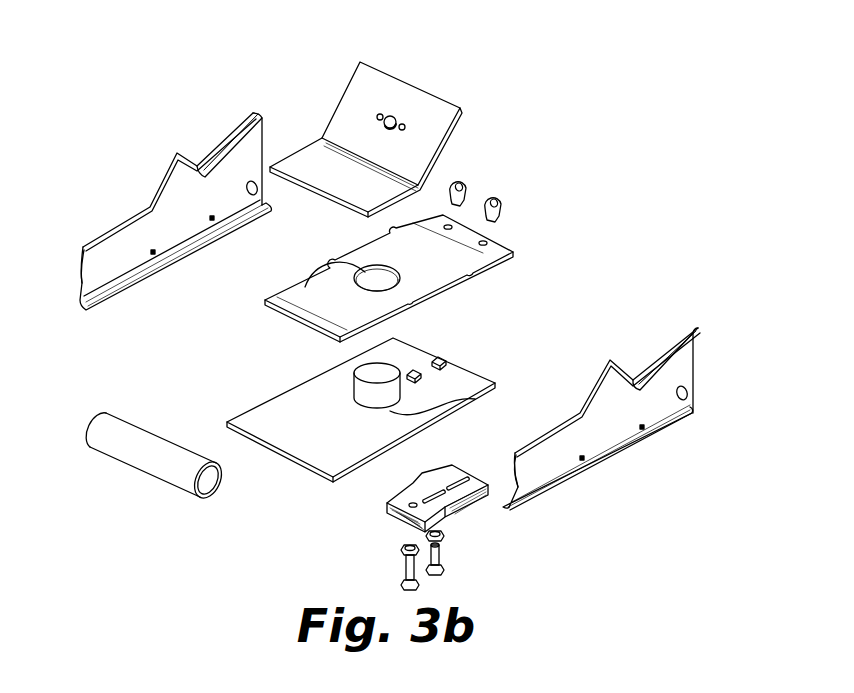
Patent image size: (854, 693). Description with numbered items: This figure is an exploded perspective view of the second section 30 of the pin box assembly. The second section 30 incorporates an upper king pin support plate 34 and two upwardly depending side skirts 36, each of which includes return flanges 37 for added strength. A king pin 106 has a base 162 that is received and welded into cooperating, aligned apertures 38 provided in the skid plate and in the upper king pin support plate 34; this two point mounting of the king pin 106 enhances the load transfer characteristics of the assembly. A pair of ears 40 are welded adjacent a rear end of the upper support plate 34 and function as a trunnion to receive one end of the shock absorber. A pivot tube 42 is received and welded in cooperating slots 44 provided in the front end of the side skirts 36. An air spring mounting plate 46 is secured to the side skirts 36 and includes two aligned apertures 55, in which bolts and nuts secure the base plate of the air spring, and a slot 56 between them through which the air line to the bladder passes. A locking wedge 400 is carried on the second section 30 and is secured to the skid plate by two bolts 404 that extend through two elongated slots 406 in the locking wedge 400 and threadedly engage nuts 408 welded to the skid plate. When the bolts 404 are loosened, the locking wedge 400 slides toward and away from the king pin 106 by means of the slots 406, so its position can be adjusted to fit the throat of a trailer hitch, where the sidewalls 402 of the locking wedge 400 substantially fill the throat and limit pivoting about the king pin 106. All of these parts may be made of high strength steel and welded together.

The second section 30 is at (620, 218).
The upper king pin support plate 34 is at (422, 275).
The side skirts 36 is at (132, 240).
The return flanges 37 is at (221, 140).
The apertures 38 is at (306, 283).
The ears 40 is at (465, 190).
The pivot tube 42 is at (147, 458).
The slots 44 is at (82, 272).
The air spring mounting plate 46 is at (420, 108).
The apertures 55 is at (402, 124).
The slot 56 is at (384, 122).
The king pin 106 is at (382, 457).
The base 162 is at (358, 392).
The locking wedge 400 is at (453, 472).
The sidewalls 402 is at (463, 512).
The bolts 404 is at (417, 577).
The elongated slots 406 is at (392, 506).
The nuts 408 is at (420, 370).